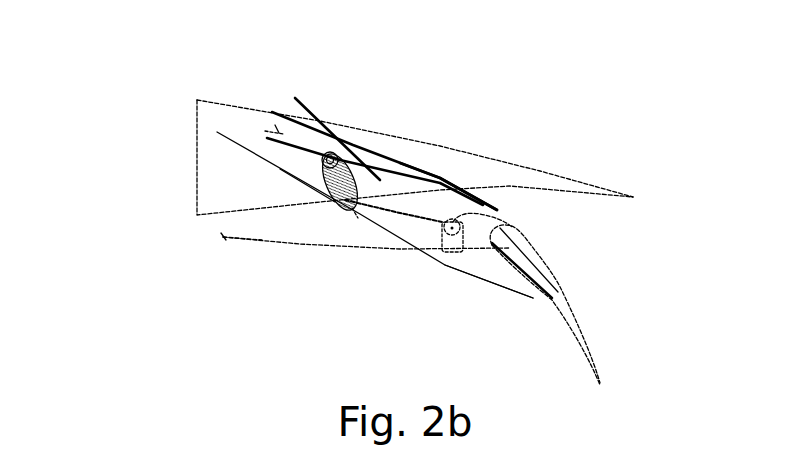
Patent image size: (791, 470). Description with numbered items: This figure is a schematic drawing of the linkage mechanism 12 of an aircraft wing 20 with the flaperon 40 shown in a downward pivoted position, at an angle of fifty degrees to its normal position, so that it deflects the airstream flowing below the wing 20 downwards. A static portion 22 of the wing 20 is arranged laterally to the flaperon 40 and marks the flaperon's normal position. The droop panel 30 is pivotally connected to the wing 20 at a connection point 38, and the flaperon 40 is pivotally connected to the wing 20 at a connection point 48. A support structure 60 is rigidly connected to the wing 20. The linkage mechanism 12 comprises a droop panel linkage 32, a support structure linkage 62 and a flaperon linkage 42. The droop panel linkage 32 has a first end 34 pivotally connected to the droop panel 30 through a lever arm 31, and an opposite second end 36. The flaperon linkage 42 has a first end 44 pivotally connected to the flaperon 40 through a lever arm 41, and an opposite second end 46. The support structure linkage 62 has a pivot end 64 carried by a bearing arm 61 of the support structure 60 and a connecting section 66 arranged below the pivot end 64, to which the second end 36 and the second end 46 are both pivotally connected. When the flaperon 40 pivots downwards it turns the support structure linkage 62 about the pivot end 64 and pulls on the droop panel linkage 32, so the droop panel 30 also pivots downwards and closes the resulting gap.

The linkage mechanism 12 is at (224, 251).
The wing 20 is at (352, 151).
The static portion 22 is at (540, 169).
The droop panel 30 is at (420, 172).
The lever arm 31 is at (339, 134).
The droop panel linkage 32 is at (326, 203).
The first end 34 is at (330, 158).
The second end 36 is at (348, 211).
The connection point 38 is at (280, 124).
The flaperon 40 is at (552, 294).
The lever arm 41 is at (460, 253).
The flaperon linkage 42 is at (418, 216).
The first end 44 is at (500, 223).
The second end 46 is at (358, 217).
The connection point 48 is at (440, 240).
The support structure 60 is at (250, 239).
The bearing arm 61 is at (314, 162).
The support structure linkage 62 is at (356, 176).
The pivot end 64 is at (338, 158).
The connecting section 66 is at (356, 200).